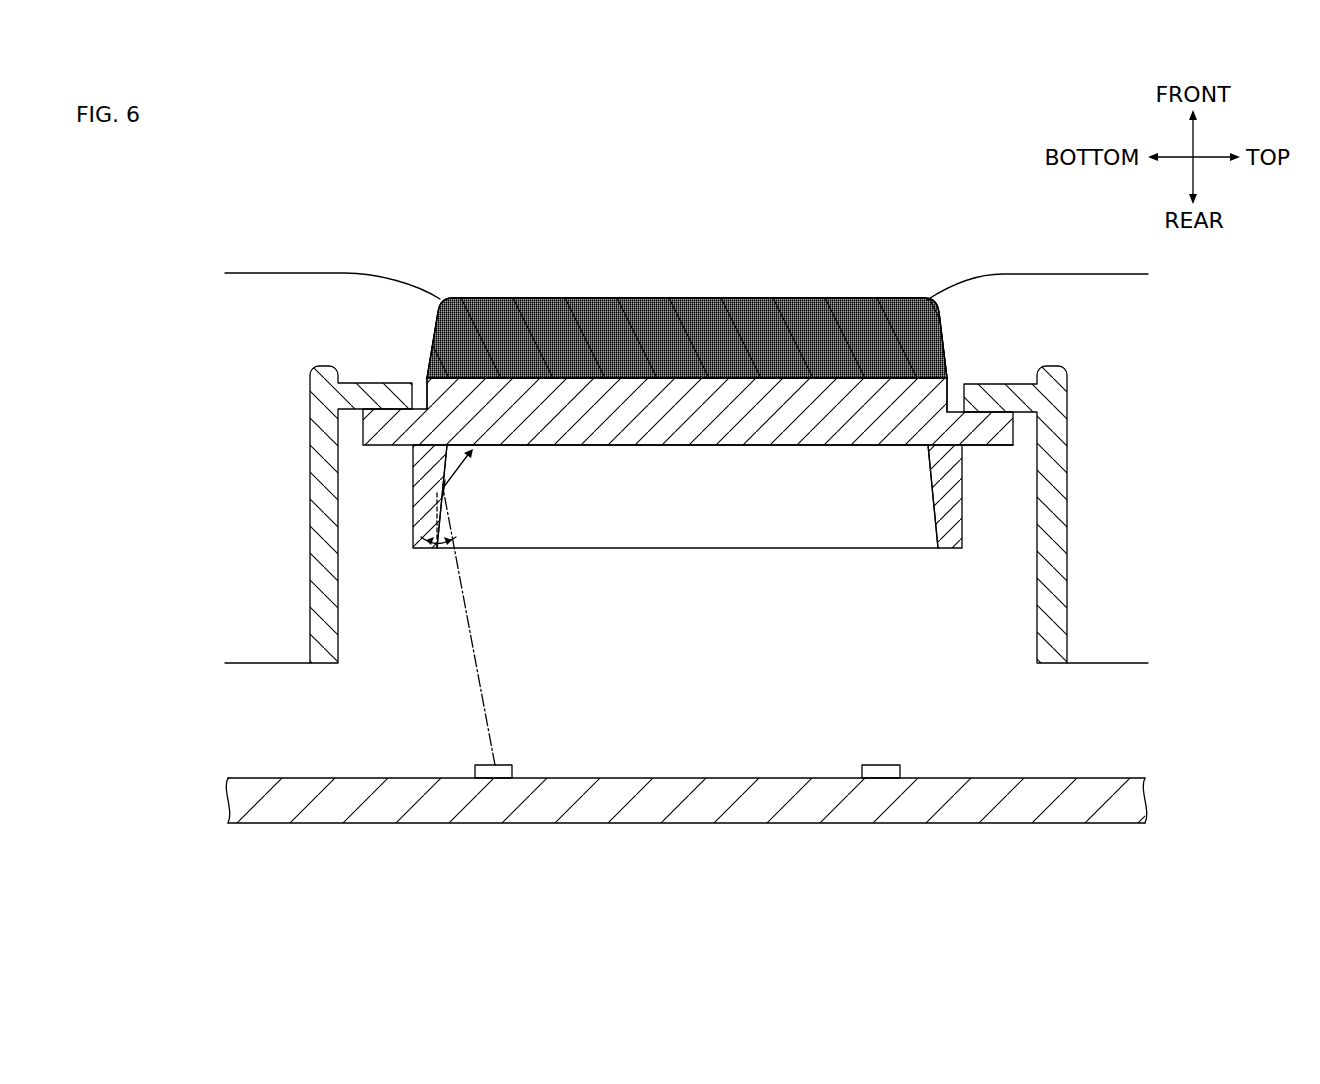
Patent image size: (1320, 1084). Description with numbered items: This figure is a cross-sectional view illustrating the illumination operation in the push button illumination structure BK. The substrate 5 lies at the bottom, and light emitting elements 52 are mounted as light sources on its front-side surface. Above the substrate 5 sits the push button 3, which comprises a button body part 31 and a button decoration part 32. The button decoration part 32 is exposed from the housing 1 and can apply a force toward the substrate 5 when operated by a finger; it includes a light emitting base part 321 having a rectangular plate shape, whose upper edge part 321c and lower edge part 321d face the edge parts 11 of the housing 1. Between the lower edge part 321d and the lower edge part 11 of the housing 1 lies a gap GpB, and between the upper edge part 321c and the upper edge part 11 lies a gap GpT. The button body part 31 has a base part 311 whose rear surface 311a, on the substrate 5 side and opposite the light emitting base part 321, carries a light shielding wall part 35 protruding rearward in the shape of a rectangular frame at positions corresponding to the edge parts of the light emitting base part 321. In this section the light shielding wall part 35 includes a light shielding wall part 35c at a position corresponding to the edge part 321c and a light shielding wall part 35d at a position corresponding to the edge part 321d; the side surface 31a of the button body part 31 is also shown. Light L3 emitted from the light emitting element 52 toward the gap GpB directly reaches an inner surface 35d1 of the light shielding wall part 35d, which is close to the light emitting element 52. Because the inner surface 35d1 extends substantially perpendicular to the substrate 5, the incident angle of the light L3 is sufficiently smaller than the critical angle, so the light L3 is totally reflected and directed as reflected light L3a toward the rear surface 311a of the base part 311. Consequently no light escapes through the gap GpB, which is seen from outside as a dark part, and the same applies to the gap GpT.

The housing 1 is at (686, 468).
The edge part of the housing 11 is at (357, 378).
The push button 3 is at (688, 387).
The button body part 31 is at (658, 448).
The side surface of base member 31a is at (422, 405).
The base part 311 is at (727, 447).
The rear surface of the base part 311a is at (836, 447).
The button decoration part 32 is at (708, 297).
The light emitting base part 321 is at (577, 297).
The upper edge part of the light emitting base part 321c is at (958, 377).
The lower edge part of the light emitting base part 321d is at (423, 360).
The light shielding wall part 35 is at (663, 550).
The light shielding wall part 35c is at (917, 550).
The light shielding wall part 35d is at (413, 500).
The inner surface of the light shielding wall part 35d1 is at (447, 489).
The substrate 5 is at (675, 825).
The light emitting element 52 is at (500, 763).
The push button illumination structure BK is at (737, 165).
The gap GpB is at (410, 292).
The gap GpT is at (969, 356).
The light L3 is at (463, 623).
The reflected light L3a is at (457, 479).